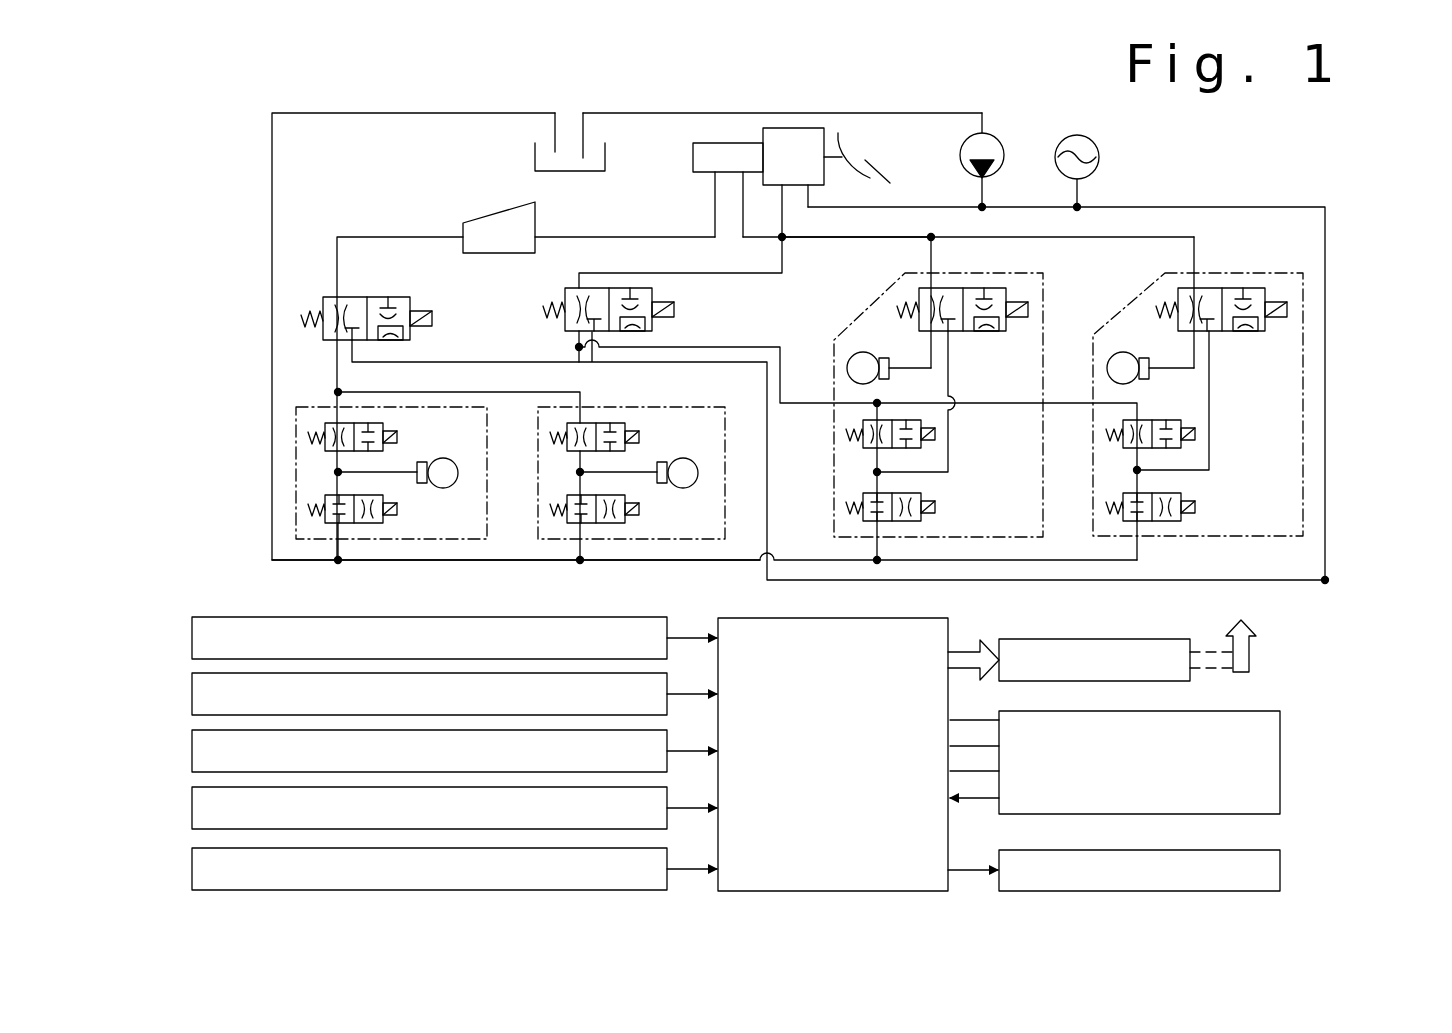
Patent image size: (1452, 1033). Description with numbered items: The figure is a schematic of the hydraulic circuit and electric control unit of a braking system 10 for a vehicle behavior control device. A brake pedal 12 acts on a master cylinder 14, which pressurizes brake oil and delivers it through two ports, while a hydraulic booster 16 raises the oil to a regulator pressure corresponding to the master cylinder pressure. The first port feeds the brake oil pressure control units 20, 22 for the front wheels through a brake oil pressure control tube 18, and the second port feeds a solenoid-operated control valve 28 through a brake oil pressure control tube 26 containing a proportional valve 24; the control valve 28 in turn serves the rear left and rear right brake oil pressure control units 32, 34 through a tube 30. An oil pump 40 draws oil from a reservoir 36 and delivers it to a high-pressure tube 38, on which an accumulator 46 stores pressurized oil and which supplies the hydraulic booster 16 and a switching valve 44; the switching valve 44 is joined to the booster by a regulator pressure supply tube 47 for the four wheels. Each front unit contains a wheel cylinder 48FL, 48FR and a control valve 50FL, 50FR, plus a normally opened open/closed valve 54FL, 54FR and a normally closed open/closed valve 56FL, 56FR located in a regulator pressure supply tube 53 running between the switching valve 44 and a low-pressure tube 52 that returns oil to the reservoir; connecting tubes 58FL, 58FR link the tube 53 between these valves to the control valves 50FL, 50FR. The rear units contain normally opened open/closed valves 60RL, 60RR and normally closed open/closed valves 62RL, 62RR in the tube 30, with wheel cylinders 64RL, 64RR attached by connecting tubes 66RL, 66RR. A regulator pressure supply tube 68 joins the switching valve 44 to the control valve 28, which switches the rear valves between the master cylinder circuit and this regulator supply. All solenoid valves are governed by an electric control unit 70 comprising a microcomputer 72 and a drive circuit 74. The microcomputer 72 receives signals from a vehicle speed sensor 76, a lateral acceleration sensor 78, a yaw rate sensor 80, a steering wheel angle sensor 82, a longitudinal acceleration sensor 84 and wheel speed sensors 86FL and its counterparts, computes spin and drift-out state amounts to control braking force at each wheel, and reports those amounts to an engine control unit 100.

The braking system 10 is at (263, 160).
The brake pedal 12 is at (881, 164).
The master cylinder 14 is at (707, 143).
The hydraulic booster 16 is at (803, 176).
The brake oil pressure control tube for the front wheels 18 is at (812, 237).
The brake oil pressure control unit for the front left wheel 20 is at (858, 325).
The brake oil pressure control unit for the front right wheel 22 is at (1148, 286).
The proportional valve 24 is at (490, 215).
The brake oil pressure control tube for the rear wheels 26 is at (356, 237).
The control valve 28 is at (352, 298).
The tube 30 is at (346, 380).
The brake oil pressure control unit for the rear left wheel 32 is at (301, 403).
The brake oil pressure control unit for the rear right wheel 34 is at (620, 540).
The reservoir 36 is at (535, 156).
The high-pressure tube 38 is at (1222, 207).
The oil pump 40 is at (1000, 147).
The switching valve 44 is at (608, 288).
The accumulator 46 is at (1096, 153).
The regulator pressure supply tube for the four wheels 47 is at (708, 273).
The wheel cylinder 48FL is at (885, 385).
The wheel cylinder 48FR is at (1112, 356).
The control valve 50FL is at (973, 290).
The control valve 50FR is at (1228, 287).
The low-pressure tube 52 is at (811, 558).
The regulator pressure supply tube for the front left and right wheels 53 is at (745, 347).
The open/closed valve 54FL is at (950, 452).
The open/closed valve 54FR is at (1182, 448).
The open/closed valve 56FL is at (918, 490).
The open/closed valve 56FR is at (1177, 528).
The connecting tube 58FL is at (950, 340).
The connecting tube 58FR is at (1210, 332).
The open/closed valve 60RL is at (341, 424).
The open/closed valve 60RR is at (617, 420).
The open/closed valve 62RL is at (348, 528).
The open/closed valve 62RR is at (577, 525).
The wheel cylinder 64RL is at (393, 518).
The wheel cylinder 64RR is at (632, 515).
The connecting tube 66RL is at (402, 473).
The connecting tube 66RR is at (637, 473).
The regulator pressure supply tube for the rear left and right wheels 68 is at (469, 362).
The electric control unit 70 is at (1304, 695).
The microcomputer 72 is at (846, 855).
The drive circuit 74 is at (1172, 681).
The vehicle speed sensor 76 is at (192, 639).
The lateral acceleration sensor 78 is at (192, 695).
The yaw rate sensor 80 is at (192, 752).
The steering wheel angle sensor 82 is at (192, 809).
The longitudinal acceleration sensor 84 is at (192, 869).
The wheel speed sensor 86FL is at (1239, 814).
The engine control unit 100 is at (1281, 870).